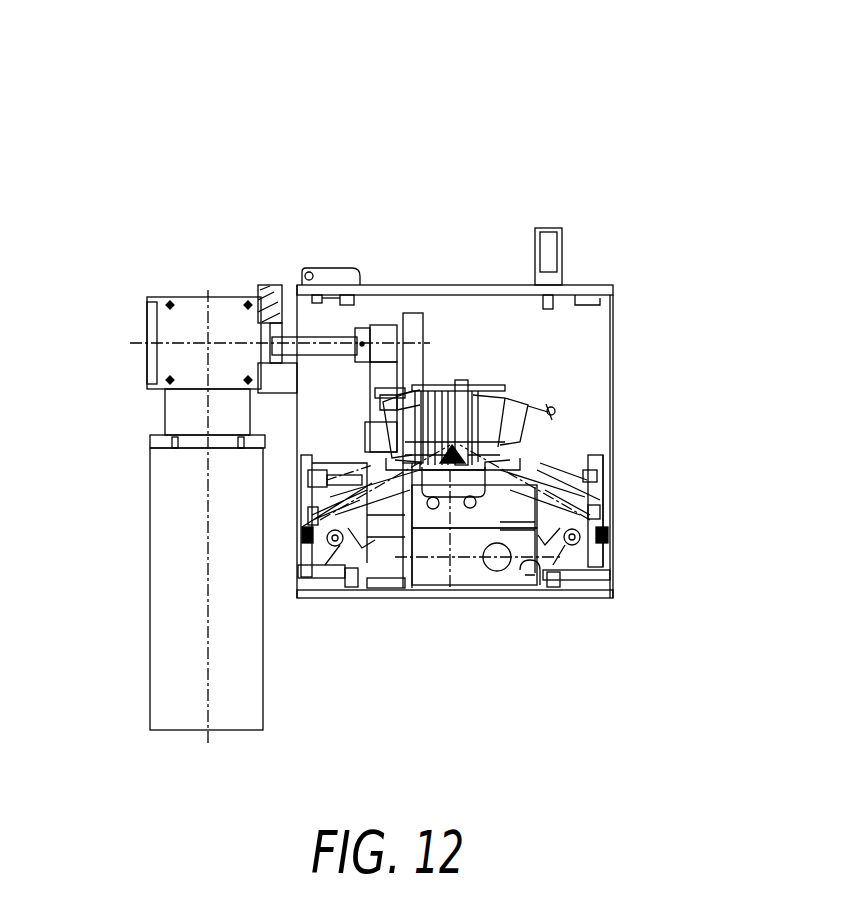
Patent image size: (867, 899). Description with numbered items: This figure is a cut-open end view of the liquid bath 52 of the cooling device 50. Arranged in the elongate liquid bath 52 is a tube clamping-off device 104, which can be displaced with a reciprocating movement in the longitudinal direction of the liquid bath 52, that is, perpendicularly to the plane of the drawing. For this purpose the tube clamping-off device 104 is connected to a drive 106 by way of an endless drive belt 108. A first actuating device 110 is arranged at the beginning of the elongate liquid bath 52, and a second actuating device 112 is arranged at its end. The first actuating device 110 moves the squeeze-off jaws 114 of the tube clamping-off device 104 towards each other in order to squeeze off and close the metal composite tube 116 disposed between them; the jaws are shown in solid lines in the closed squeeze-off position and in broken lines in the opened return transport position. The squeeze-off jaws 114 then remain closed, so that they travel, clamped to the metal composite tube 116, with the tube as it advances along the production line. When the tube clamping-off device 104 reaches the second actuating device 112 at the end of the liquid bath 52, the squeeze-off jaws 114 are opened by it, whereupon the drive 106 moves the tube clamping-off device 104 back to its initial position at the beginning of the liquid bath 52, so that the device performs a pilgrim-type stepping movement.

The cooling device 50 is at (446, 172).
The liquid bath 52 is at (614, 370).
The tube clamping-off device 104 is at (481, 362).
The drive 106 is at (172, 558).
The endless drive belt 108 is at (384, 332).
The first actuating device 110 is at (297, 548).
The second actuating device 112 is at (612, 524).
The squeeze-off jaws 114 is at (438, 378).
The metal composite tube 116 is at (538, 452).